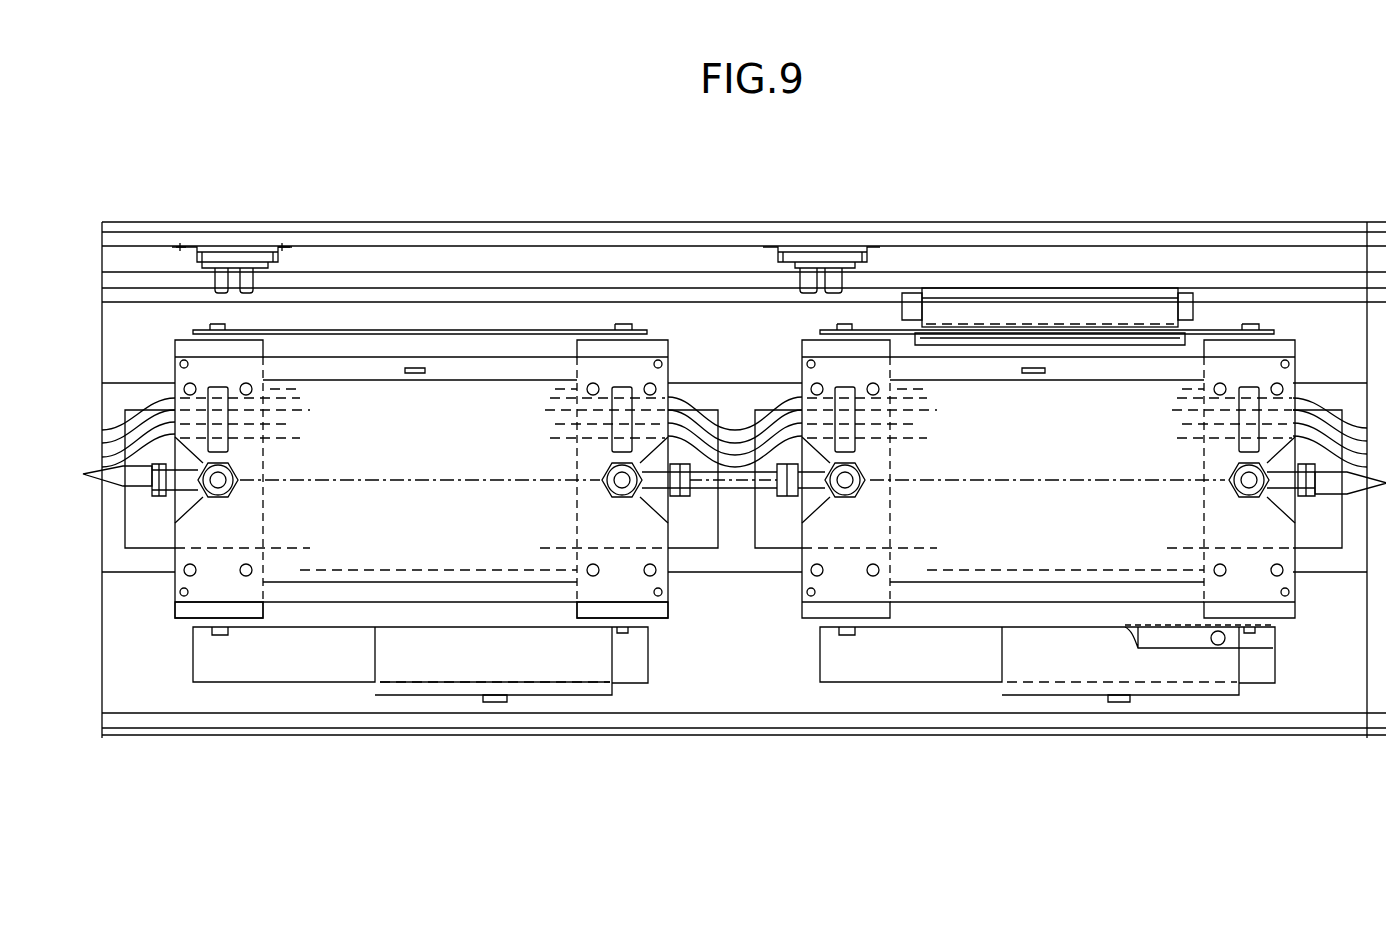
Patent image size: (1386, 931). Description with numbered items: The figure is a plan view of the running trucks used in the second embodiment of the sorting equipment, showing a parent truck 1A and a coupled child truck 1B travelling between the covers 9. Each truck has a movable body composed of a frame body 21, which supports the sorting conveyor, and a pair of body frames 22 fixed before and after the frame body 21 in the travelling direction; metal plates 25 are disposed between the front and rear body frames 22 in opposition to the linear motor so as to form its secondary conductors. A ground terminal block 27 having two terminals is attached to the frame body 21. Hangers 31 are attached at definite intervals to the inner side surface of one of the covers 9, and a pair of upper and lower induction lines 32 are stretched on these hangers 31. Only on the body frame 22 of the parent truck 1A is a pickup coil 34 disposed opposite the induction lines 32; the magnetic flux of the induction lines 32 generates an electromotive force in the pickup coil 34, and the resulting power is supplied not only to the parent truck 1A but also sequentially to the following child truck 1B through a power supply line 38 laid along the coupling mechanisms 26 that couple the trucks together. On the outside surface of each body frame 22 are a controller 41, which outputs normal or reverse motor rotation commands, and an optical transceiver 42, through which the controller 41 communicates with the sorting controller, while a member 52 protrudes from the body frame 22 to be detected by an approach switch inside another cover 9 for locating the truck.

The cover 9 is at (1190, 224).
The hanger 31 is at (250, 262).
The induction line 32 is at (468, 283).
The ground terminal block 27 is at (416, 368).
The pickup coil 34 is at (1040, 293).
The coupling mechanism 26 is at (167, 453).
The power supply line 38 is at (735, 428).
The metal plate 25 is at (697, 538).
The frame body 21 is at (182, 572).
The body frame 22 is at (182, 616).
The child truck 1B is at (185, 678).
The parent truck 1A is at (828, 690).
The member to be detected 52 is at (310, 668).
The controller 41 is at (475, 688).
The optical transceiver 42 is at (498, 702).